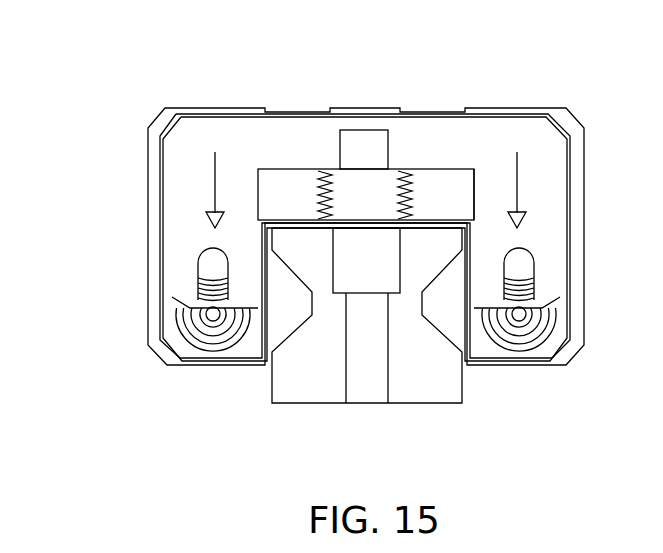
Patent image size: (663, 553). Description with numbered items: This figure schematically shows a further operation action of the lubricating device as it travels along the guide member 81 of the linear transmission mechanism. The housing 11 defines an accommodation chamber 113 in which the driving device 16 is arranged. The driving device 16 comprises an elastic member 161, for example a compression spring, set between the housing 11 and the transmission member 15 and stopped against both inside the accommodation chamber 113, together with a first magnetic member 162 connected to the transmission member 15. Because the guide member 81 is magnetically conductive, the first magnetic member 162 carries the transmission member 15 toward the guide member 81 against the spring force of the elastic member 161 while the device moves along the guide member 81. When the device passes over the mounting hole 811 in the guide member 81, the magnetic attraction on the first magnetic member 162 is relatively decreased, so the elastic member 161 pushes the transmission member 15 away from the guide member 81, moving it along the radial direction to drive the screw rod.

The housing 11 is at (165, 232).
The transmission member 15 is at (307, 135).
The driving device 16 is at (447, 194).
The elastic member 161 is at (417, 190).
The first magnetic member 162 is at (377, 145).
The accommodation chamber 113 is at (462, 198).
The guide member 81 is at (270, 385).
The mounting hole 811 is at (363, 350).